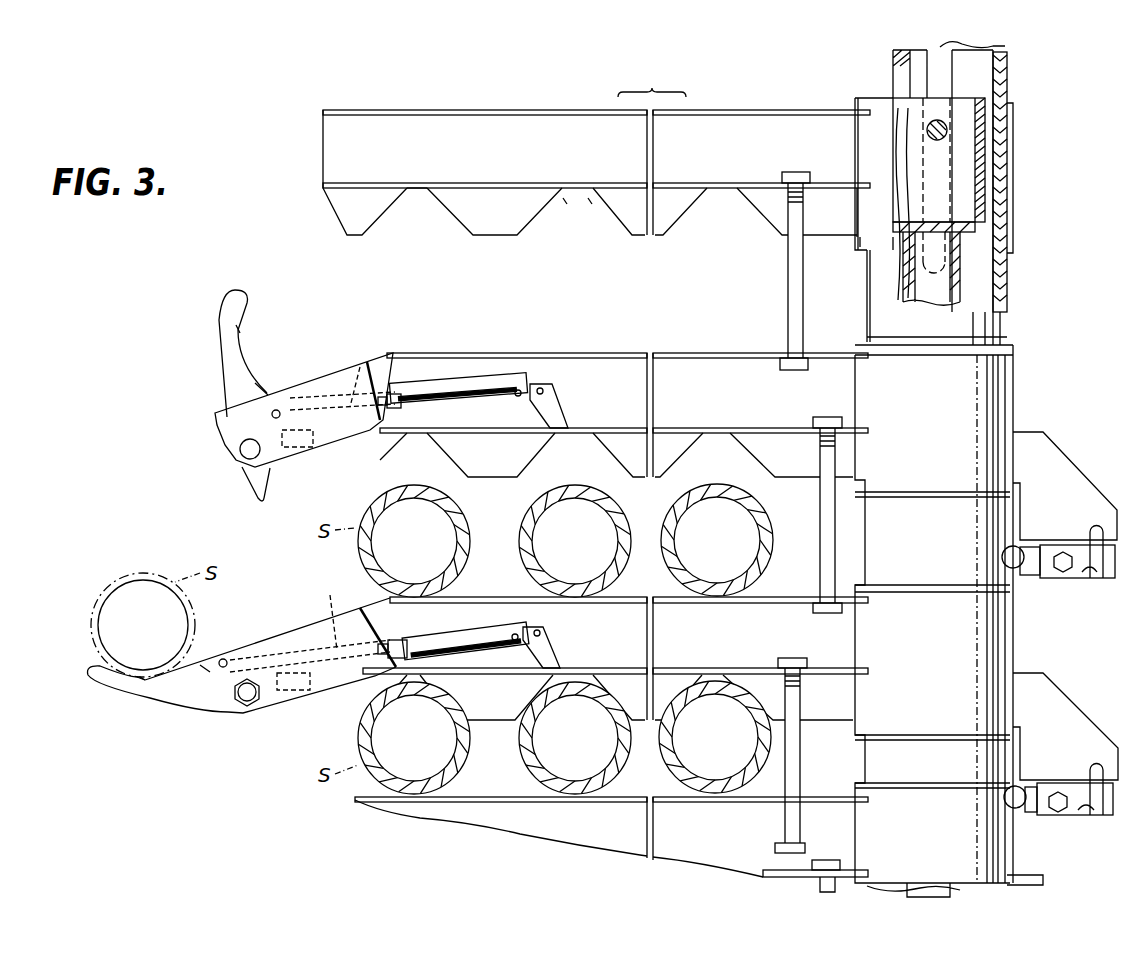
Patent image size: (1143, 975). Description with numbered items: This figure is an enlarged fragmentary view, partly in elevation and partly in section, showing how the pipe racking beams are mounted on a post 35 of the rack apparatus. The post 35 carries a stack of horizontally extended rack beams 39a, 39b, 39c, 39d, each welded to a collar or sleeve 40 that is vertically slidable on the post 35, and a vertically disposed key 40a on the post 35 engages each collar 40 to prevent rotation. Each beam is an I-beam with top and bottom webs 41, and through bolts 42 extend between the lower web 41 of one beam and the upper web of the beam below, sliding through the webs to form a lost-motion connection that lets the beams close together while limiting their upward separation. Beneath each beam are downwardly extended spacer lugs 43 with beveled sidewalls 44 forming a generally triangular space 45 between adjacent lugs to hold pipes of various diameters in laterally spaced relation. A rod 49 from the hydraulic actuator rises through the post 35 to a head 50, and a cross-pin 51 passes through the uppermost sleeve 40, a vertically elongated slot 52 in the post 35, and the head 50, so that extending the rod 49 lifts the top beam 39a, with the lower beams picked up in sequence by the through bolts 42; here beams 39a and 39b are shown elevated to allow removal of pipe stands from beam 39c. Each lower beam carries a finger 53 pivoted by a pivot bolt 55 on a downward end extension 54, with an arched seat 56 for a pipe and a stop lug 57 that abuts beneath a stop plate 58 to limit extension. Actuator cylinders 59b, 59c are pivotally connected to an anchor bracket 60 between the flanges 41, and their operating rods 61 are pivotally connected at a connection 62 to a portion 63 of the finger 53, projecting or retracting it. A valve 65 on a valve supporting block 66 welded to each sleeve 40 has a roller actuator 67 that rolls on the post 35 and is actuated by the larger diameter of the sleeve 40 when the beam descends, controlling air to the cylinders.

The post 35 is at (1006, 332).
The rack beam 39a is at (504, 161).
The rack beam 39b is at (708, 372).
The rack beam 39c is at (699, 658).
The rack beam 39d is at (559, 837).
The collar or sleeve 40 is at (1010, 207).
The key 40a is at (857, 300).
The webs 41 is at (462, 110).
The through bolts 42 is at (790, 250).
The spacer lugs 43 is at (522, 230).
The beveled sidewalls 44 is at (596, 210).
The triangular space 45 is at (417, 203).
The rod 49 is at (962, 280).
The head 50 is at (985, 165).
The cross-pin 51 is at (948, 131).
The slot 52 is at (1003, 47).
The finger 53 is at (222, 366).
The downward end extension 54 is at (220, 425).
The pivot bolt 55 is at (242, 455).
The seat 56 is at (241, 332).
The stop lug 57 is at (257, 496).
The stop plate 58 is at (292, 456).
The actuator cylinder 59b is at (445, 385).
The actuator cylinder 59c is at (470, 627).
The anchor bracket 60 is at (548, 390).
The operating rod 61 is at (363, 365).
The pivotal connection 62 is at (287, 392).
The portion of finger 63 is at (258, 385).
The valve 65 is at (1063, 578).
The valve supporting block 66 is at (1068, 458).
The roller actuator 67 is at (1018, 552).